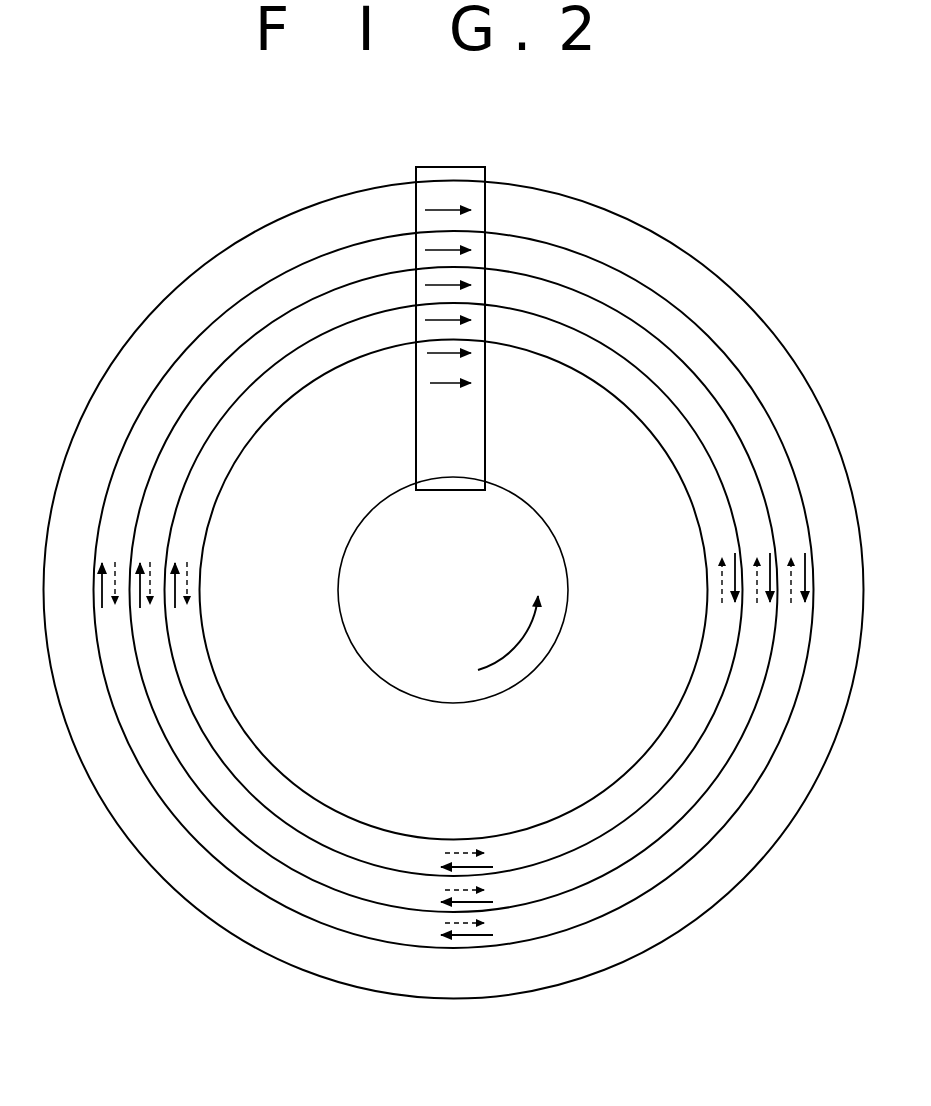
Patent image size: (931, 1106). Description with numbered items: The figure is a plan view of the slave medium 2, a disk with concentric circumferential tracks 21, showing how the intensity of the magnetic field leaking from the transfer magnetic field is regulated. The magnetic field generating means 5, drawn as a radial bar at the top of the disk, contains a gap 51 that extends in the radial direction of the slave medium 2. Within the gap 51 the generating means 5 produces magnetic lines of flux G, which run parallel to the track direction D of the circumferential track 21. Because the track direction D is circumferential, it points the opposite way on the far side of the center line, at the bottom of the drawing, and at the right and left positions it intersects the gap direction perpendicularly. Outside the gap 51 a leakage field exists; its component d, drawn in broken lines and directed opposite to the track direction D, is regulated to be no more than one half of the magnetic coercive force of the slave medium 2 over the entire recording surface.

The slave medium 2 is at (204, 259).
The circumferential track 21 is at (623, 337).
The magnetic field generating means 5 is at (409, 162).
The gap 51 is at (463, 166).
The magnetic lines of flux G is at (440, 250).
The track direction D is at (100, 592).
The component of leakage magnetic field d is at (186, 583).